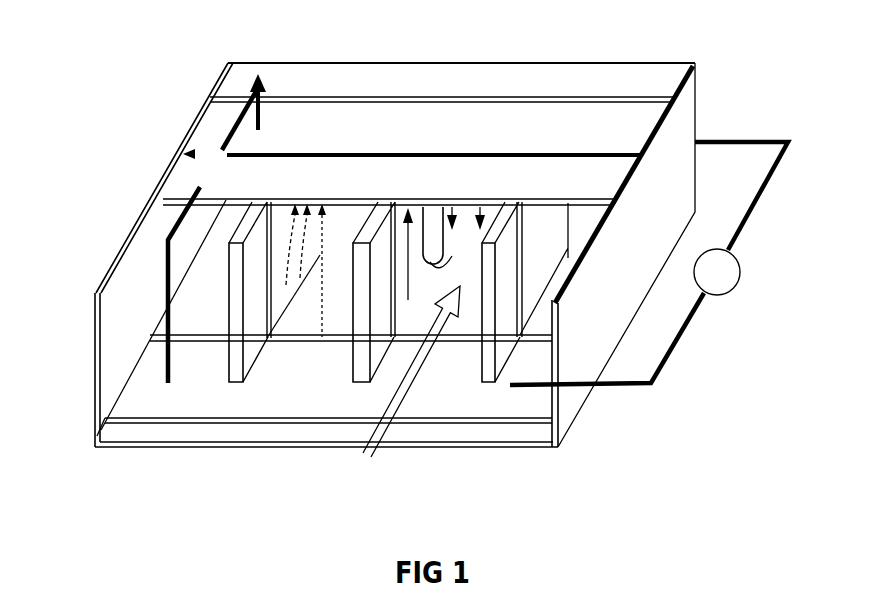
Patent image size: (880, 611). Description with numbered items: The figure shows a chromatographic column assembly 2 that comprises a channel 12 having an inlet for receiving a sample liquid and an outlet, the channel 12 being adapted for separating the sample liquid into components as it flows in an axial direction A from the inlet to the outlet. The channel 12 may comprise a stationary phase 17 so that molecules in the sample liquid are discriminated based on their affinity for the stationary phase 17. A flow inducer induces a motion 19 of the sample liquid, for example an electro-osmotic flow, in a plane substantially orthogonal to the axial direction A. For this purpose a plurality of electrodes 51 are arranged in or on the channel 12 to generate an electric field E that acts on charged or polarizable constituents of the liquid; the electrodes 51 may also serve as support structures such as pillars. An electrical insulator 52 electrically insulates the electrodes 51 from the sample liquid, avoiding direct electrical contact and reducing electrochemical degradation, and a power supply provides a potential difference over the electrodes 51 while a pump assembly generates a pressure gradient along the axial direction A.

The chromatographic column assembly 2 is at (116, 101).
The motion 19 is at (420, 220).
The channel 12 is at (467, 223).
The electrodes 51 is at (638, 126).
The electrical insulator 52 is at (513, 200).
The stationary phase 17 is at (523, 237).
The electric field E is at (320, 255).
The axial direction A is at (406, 388).